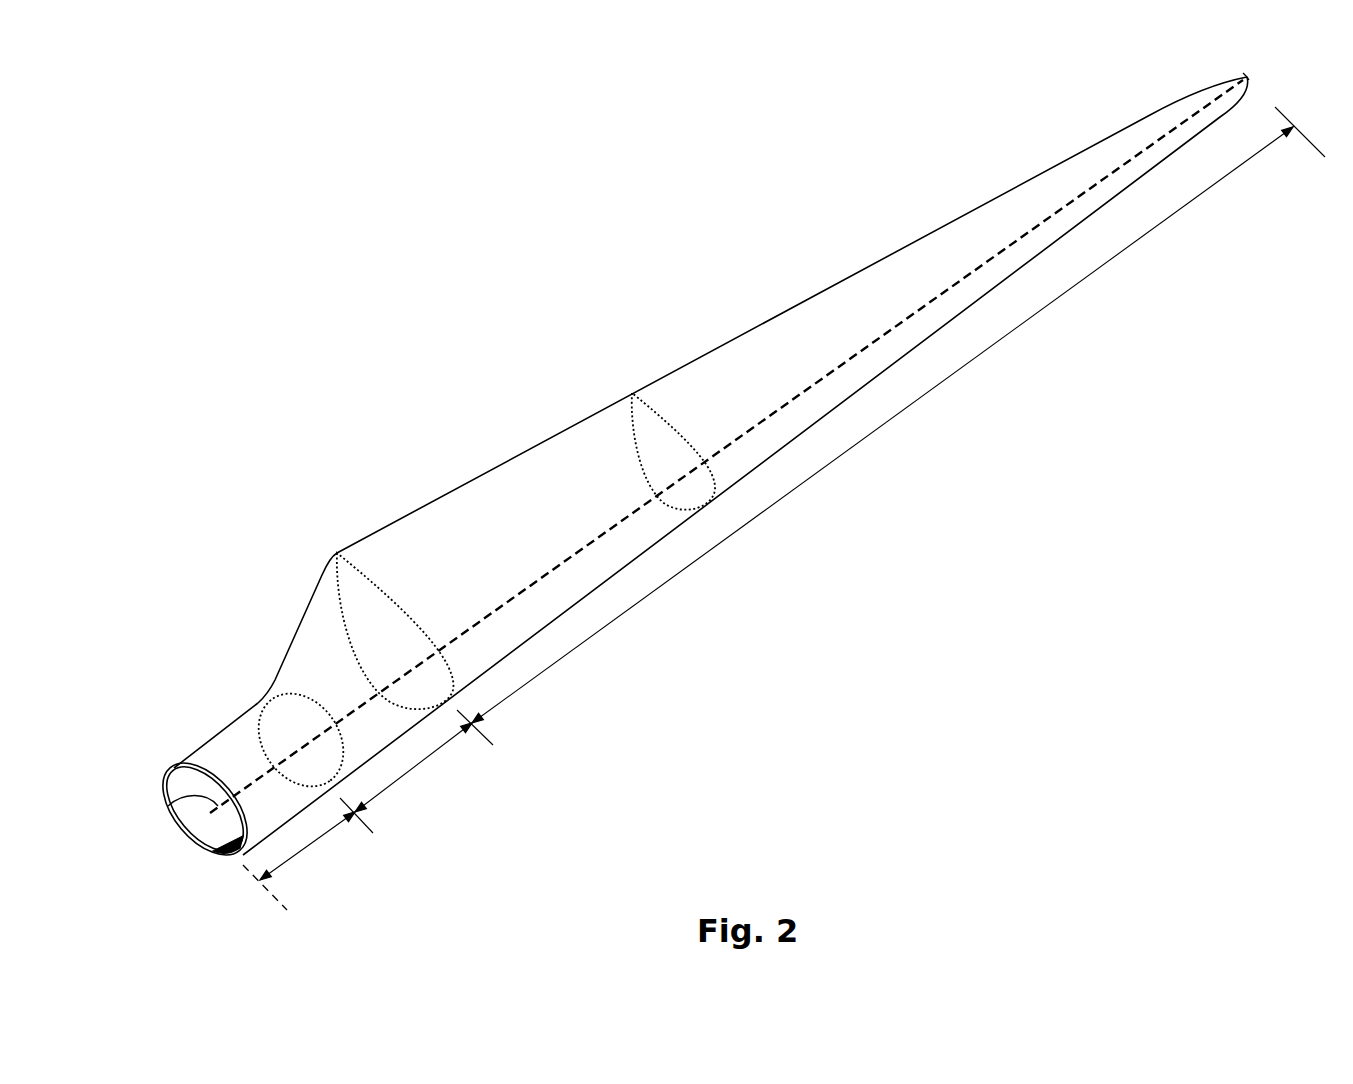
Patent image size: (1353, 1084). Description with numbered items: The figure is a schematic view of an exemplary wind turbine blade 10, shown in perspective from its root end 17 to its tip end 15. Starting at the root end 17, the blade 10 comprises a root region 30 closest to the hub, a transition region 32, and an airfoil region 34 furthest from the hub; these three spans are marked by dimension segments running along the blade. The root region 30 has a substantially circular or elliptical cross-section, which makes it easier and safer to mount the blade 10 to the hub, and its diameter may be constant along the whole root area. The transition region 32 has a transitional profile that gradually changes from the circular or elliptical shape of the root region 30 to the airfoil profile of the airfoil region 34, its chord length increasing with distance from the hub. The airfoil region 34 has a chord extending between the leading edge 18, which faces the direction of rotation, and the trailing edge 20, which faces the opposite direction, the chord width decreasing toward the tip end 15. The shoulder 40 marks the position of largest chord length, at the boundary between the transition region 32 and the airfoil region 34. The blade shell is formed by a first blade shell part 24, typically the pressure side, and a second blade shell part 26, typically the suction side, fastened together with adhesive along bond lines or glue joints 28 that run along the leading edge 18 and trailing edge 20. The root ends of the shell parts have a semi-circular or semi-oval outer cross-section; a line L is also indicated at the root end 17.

The wind turbine blade 10 is at (516, 321).
The tip end 15 is at (1247, 77).
The root end 17 is at (187, 778).
The leading edge 18 is at (920, 347).
The trailing edge 20 is at (800, 303).
The first blade shell part 24 is at (193, 762).
The second blade shell part 26 is at (203, 843).
The bond lines or glue joints 28 is at (175, 767).
The root region 30 is at (313, 845).
The transition region 32 is at (420, 767).
The airfoil region 34 is at (800, 487).
The shoulder 40 is at (337, 553).
The line L is at (168, 806).